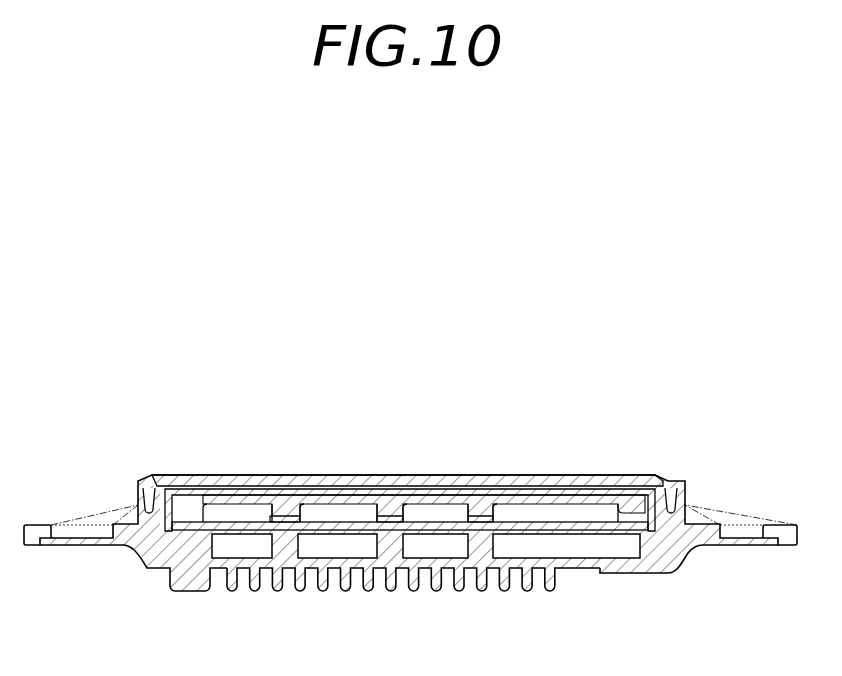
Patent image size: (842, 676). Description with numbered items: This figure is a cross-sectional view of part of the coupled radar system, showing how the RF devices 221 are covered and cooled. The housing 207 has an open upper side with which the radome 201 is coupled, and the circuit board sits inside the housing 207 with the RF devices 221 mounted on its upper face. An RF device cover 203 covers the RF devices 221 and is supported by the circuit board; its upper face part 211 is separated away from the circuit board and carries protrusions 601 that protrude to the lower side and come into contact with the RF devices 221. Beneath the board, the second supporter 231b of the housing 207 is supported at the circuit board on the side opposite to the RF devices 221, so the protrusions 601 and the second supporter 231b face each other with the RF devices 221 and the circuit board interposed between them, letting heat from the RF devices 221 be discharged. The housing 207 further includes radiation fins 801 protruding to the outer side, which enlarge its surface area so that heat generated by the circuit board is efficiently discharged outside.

The radome 201 is at (377, 477).
The RF device cover 203 is at (235, 494).
The upper face part 211 is at (410, 510).
The RF device 221 is at (282, 516).
The protrusion 601 is at (300, 505).
The housing 207 is at (157, 562).
The second supporter 231b is at (278, 543).
The radiation fin 801 is at (320, 592).